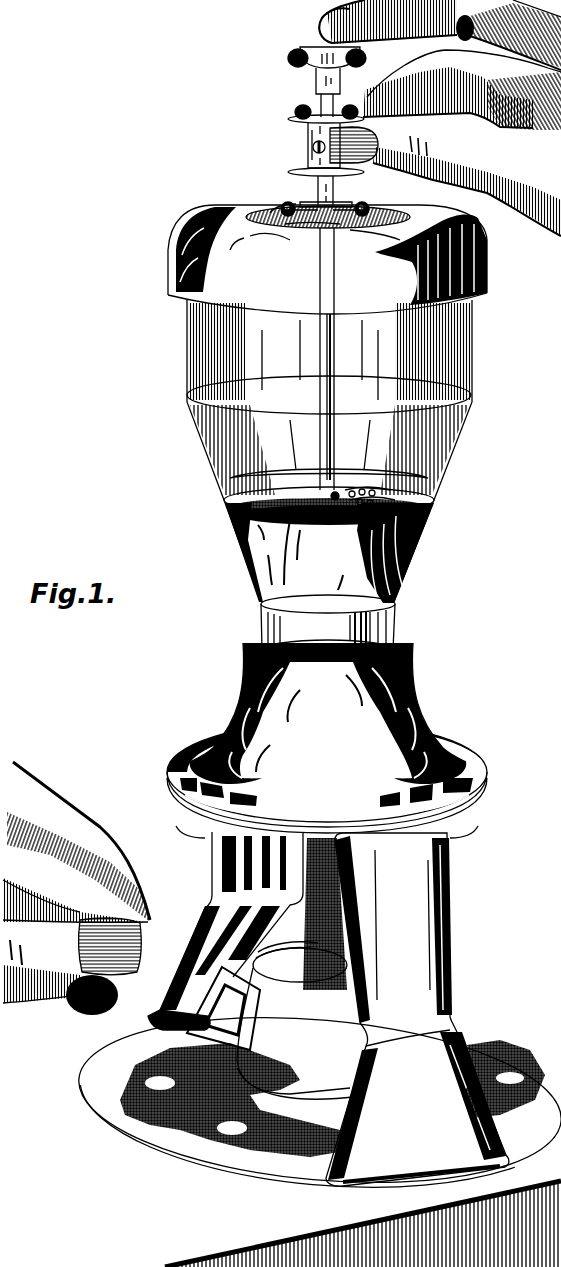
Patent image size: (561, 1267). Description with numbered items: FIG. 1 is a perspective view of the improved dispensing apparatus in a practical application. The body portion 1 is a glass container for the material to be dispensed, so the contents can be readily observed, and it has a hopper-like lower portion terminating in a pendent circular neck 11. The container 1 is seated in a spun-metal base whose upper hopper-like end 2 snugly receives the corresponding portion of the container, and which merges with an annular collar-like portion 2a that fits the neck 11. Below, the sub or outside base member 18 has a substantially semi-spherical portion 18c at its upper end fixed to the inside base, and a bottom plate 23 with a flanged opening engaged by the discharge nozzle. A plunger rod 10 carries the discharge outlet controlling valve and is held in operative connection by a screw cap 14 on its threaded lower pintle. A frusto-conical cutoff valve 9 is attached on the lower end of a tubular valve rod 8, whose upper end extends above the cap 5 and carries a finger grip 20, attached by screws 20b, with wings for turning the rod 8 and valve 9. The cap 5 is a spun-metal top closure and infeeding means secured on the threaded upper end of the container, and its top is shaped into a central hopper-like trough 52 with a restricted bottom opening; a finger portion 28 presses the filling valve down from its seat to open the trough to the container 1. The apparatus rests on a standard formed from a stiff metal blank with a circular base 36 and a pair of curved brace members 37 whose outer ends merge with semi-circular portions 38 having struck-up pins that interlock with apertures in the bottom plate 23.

The body portion 1 is at (462, 362).
The upper hopper-like end 2 is at (404, 548).
The annular collar-like portion 2a is at (388, 622).
The cap 5 is at (412, 210).
The tubular valve rod 8 is at (336, 192).
The cutoff valve 9 is at (330, 490).
The plunger rod 10 is at (338, 102).
The pendent circular neck 11 is at (370, 492).
The screw cap 14 is at (318, 50).
The sub or outside base member 18 is at (238, 740).
The semi-spherical portion 18c is at (400, 668).
The finger grip 20 is at (308, 138).
The screws 20b is at (308, 156).
The bottom plate 23 is at (206, 836).
The finger portion 28 is at (370, 206).
The circular base 36 is at (82, 1078).
The brace members 37 is at (212, 886).
The semi-circular portions 38 is at (180, 828).
The central hopper-like trough 52 is at (270, 212).